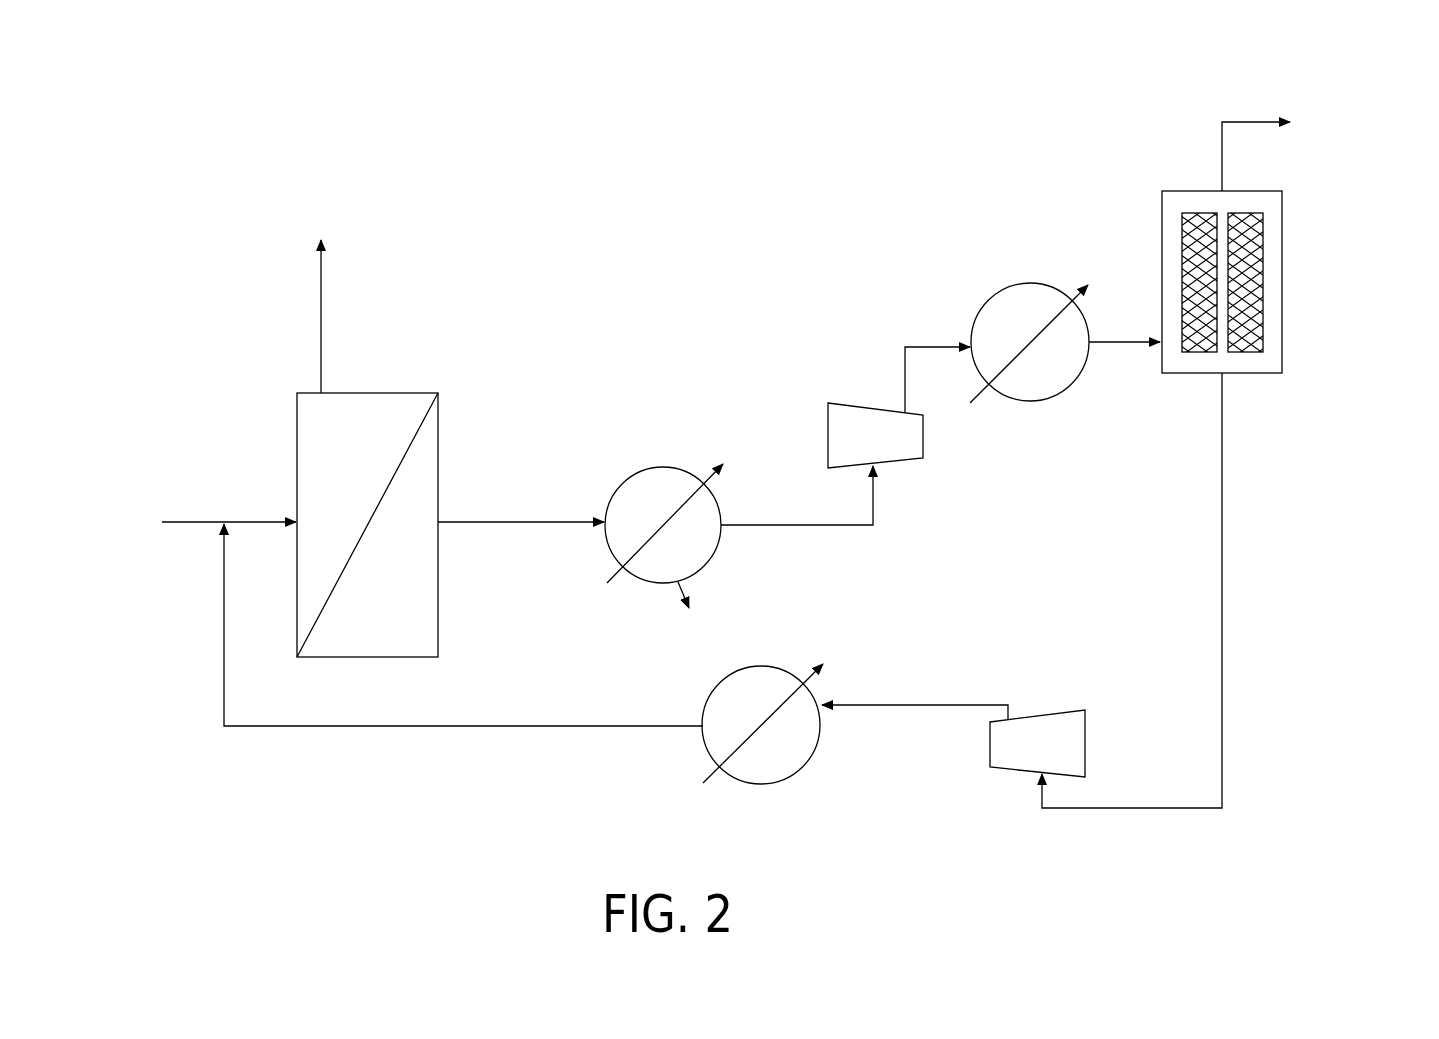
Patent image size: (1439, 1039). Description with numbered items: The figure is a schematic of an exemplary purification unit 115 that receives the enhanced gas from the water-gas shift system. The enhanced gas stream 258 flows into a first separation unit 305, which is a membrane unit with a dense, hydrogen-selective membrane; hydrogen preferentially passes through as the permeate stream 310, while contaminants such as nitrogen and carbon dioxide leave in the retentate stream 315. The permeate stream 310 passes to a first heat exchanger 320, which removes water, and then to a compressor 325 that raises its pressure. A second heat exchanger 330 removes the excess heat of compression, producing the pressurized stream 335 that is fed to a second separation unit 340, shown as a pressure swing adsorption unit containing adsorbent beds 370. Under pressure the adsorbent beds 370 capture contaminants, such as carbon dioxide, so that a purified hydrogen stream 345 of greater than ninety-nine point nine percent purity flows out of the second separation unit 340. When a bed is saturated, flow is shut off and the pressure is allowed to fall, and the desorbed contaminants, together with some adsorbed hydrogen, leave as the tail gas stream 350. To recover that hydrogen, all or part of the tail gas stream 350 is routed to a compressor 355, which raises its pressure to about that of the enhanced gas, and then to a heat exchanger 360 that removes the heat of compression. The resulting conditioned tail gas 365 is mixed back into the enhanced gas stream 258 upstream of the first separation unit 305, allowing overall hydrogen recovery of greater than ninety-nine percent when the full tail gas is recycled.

The purification unit 115 is at (552, 108).
The enhanced gas stream 258 is at (193, 525).
The first separation unit 305 is at (345, 393).
The permeate stream 310 is at (452, 525).
The retentate stream 315 is at (320, 303).
The first heat exchanger 320 is at (650, 467).
The compressor 325 is at (897, 465).
The second heat exchanger 330 is at (1013, 288).
The pressurized stream 335 is at (1125, 345).
The second separation unit 340 is at (1276, 282).
The purified H2 stream 345 is at (1218, 162).
The tail gas stream 350 is at (1222, 563).
The compressor 355 is at (1029, 718).
The heat exchanger 360 is at (783, 782).
The conditioned tail gas 365 is at (223, 669).
The adsorbent beds 370 is at (1217, 300).